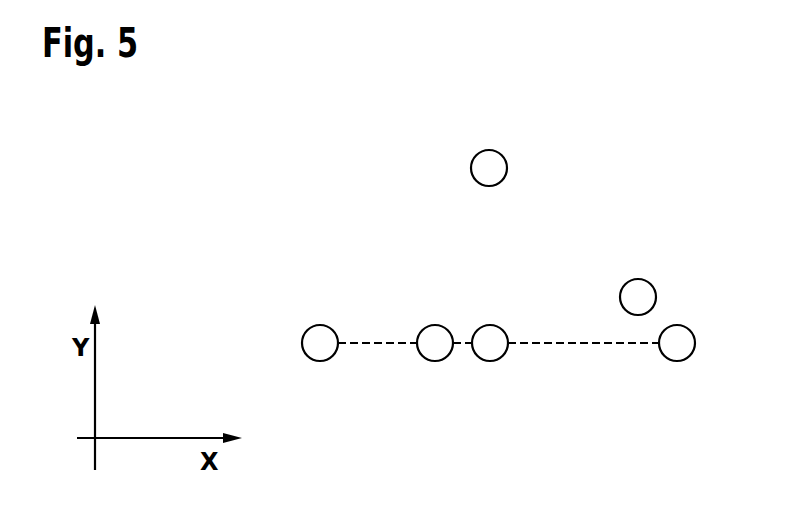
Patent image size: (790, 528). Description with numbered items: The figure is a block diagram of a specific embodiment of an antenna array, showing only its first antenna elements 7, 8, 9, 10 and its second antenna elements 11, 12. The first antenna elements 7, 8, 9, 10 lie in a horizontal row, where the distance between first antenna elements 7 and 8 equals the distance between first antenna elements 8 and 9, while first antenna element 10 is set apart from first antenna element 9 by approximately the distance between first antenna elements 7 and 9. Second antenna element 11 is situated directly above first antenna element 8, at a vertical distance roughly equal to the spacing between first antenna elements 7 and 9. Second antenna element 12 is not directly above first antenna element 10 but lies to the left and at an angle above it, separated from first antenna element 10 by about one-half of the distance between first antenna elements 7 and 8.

The first antenna element 7 is at (320, 361).
The first antenna element 8 is at (436, 361).
The first antenna element 9 is at (490, 361).
The first antenna element 10 is at (678, 361).
The second antenna element 11 is at (471, 168).
The second antenna element 12 is at (640, 279).